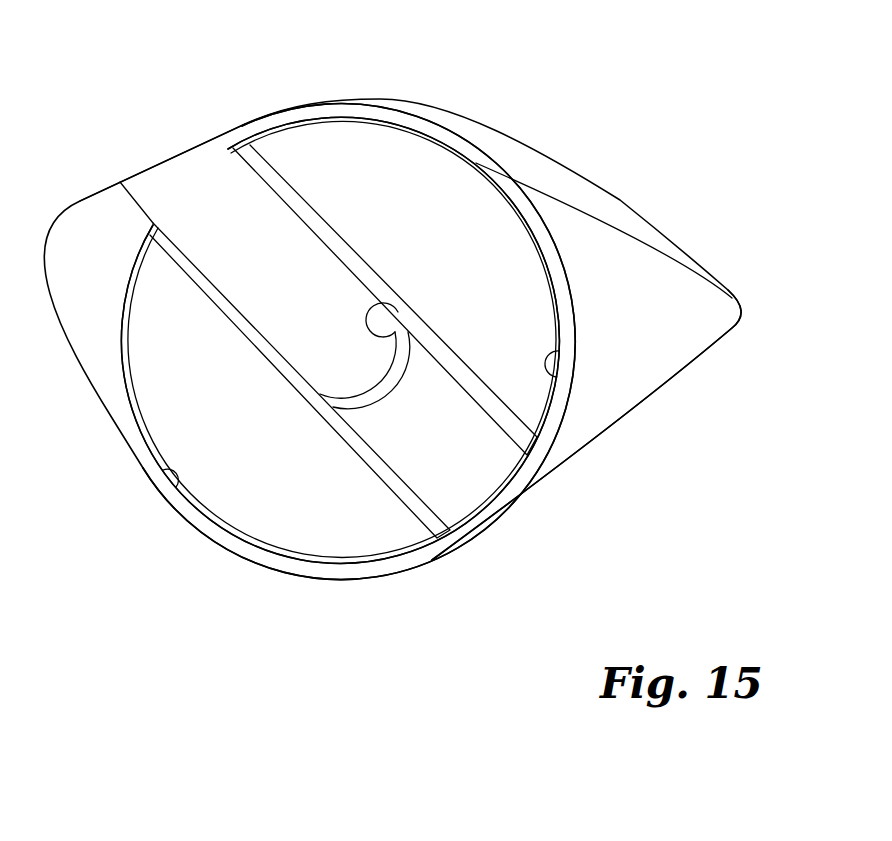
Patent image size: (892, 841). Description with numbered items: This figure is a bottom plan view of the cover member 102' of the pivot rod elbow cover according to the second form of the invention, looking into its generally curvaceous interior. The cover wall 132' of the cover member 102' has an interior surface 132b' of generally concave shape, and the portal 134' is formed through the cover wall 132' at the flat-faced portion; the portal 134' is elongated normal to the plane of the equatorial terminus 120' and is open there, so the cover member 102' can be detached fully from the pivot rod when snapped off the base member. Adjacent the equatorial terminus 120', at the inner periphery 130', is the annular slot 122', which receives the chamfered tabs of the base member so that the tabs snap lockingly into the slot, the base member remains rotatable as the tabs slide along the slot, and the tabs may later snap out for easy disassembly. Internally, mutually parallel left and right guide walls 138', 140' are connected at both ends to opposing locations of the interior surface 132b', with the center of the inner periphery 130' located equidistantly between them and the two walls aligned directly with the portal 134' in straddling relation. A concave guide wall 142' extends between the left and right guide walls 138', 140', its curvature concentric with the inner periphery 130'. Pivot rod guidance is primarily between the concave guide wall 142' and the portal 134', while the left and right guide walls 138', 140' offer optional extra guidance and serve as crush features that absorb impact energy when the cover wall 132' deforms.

The cover member 102' is at (392, 299).
The equatorial terminus 120' is at (586, 361).
The annular slot 122' is at (649, 387).
The inner periphery 130' is at (116, 502).
The cover wall 132' is at (359, 373).
The interior surface 132b' is at (340, 294).
The portal 134' is at (162, 149).
The left guide wall 138' is at (403, 271).
The right guide wall 140' is at (300, 417).
The concave guide wall 142' is at (492, 287).